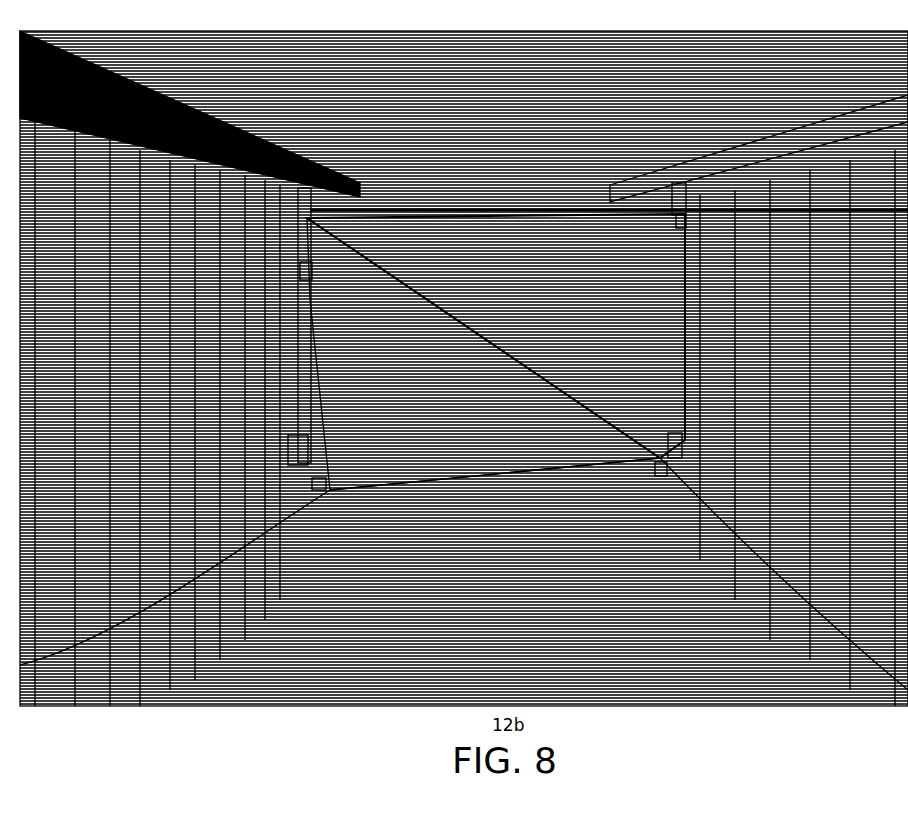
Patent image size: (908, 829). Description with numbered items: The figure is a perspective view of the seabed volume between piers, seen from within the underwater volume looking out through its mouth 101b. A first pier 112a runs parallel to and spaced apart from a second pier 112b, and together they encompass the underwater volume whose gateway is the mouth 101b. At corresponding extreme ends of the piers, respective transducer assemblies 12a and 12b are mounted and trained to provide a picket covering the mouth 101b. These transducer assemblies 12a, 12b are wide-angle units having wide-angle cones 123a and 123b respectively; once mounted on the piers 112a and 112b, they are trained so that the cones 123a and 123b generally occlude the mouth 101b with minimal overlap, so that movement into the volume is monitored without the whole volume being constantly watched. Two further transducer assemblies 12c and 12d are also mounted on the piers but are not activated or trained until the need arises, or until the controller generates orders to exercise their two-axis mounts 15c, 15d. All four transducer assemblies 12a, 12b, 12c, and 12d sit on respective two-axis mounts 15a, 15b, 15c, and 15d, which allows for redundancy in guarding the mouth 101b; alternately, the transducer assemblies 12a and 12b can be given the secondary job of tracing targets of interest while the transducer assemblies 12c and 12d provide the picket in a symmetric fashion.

The first pier 112a is at (705, 140).
The second pier 112b is at (345, 172).
The mouth 101b is at (488, 195).
The transducer assembly 12a is at (672, 445).
The transducer assembly 12b is at (335, 244).
The transducer assembly 12c is at (676, 200).
The transducer assembly 12d is at (320, 460).
The two-axis mount 15a is at (665, 472).
The two-axis mount 15b is at (312, 278).
The two-axis mount 15c is at (685, 226).
The two-axis mount 15d is at (326, 484).
The wide-angle cone 123a is at (553, 289).
The wide-angle cone 123b is at (422, 334).